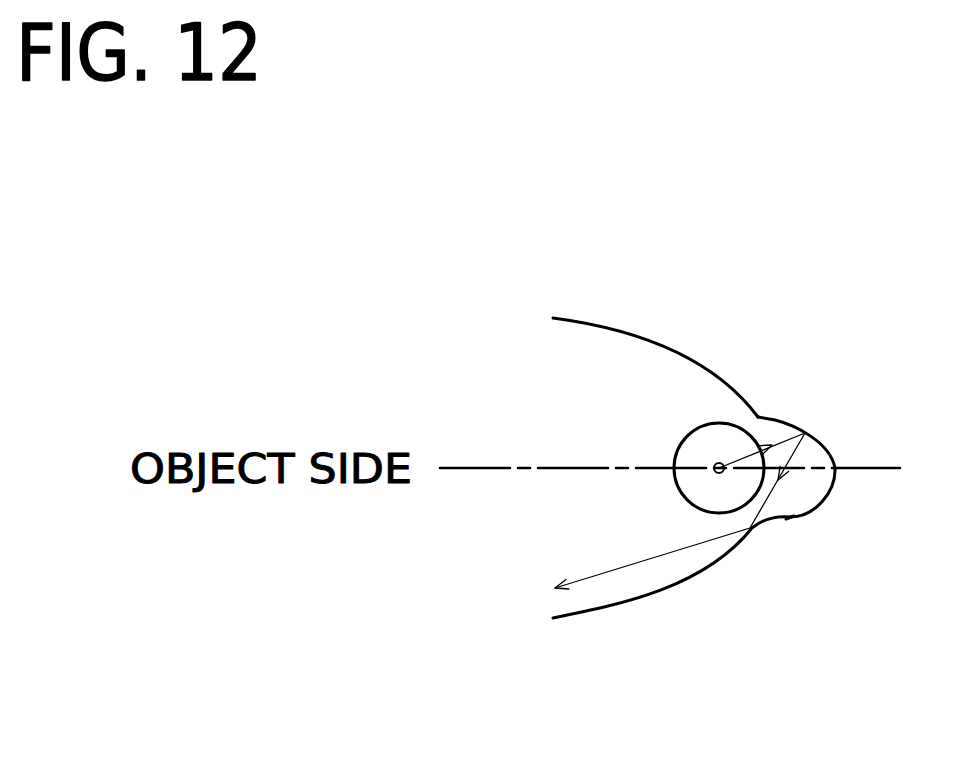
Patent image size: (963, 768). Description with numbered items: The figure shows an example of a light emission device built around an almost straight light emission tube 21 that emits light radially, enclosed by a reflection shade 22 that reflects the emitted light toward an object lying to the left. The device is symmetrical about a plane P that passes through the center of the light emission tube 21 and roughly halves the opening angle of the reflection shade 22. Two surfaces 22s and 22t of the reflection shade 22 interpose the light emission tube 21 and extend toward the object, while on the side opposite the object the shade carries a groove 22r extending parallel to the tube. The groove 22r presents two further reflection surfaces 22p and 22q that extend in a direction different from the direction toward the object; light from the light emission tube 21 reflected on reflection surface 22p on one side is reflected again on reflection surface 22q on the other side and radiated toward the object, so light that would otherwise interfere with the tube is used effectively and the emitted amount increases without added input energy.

The plane P is at (463, 470).
The light emission tube 21 is at (692, 492).
The reflection shade 22 is at (726, 470).
The surface 22s is at (580, 318).
The surface 22t is at (600, 612).
The reflection surface 22p is at (823, 438).
The reflection surface 22q is at (790, 520).
The groove 22r is at (818, 489).